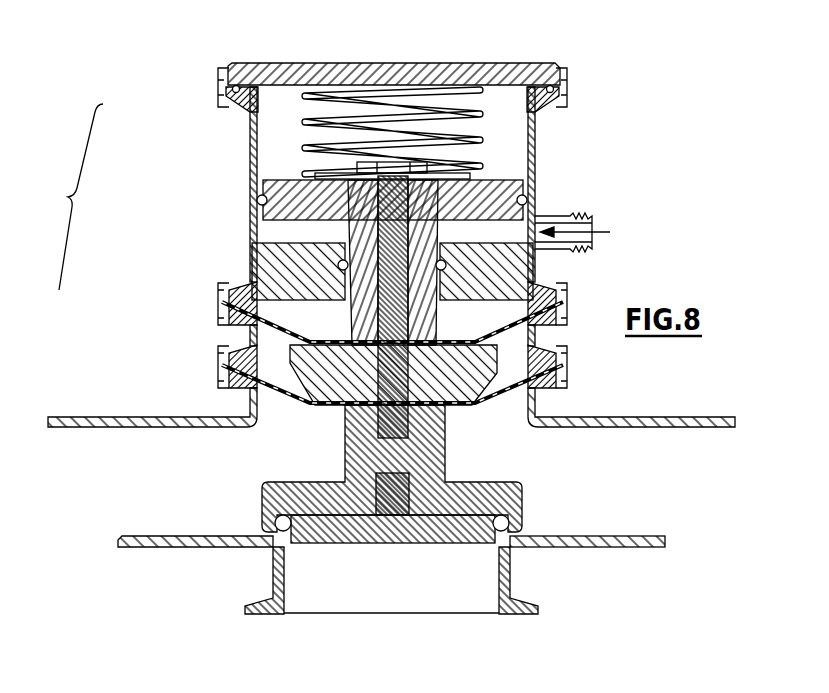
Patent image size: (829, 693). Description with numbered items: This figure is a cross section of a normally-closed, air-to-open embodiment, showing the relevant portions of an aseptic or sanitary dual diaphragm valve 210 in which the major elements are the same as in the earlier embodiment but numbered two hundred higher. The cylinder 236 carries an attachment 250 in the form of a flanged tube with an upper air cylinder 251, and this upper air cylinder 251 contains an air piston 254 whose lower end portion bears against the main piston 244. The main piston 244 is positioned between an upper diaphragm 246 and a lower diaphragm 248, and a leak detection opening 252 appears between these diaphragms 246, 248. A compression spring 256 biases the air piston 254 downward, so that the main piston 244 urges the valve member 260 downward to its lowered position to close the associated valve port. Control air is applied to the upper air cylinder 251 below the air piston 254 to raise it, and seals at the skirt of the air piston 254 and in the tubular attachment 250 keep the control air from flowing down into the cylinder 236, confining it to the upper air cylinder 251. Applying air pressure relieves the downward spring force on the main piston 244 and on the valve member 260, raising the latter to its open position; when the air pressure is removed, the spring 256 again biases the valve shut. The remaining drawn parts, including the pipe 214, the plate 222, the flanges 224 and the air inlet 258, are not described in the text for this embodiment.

The aseptic or sanitary dual diaphragm valve 210 is at (65, 197).
The pipe / outlet fitting 214 is at (274, 577).
The lower plate 222 is at (143, 548).
The left bottom flange plate 224 is at (110, 417).
The cylinder 236 is at (206, 190).
The main piston 244 is at (324, 363).
The upper diaphragm 246 is at (484, 330).
The lower diaphragm 248 is at (500, 388).
The attachment 250 is at (240, 225).
The upper air cylinder 251 is at (250, 152).
The leak detection opening 252 is at (238, 326).
The air piston 254 is at (496, 197).
The compression spring 256 is at (453, 64).
The air port 258 is at (580, 214).
The valve member 260 is at (482, 462).